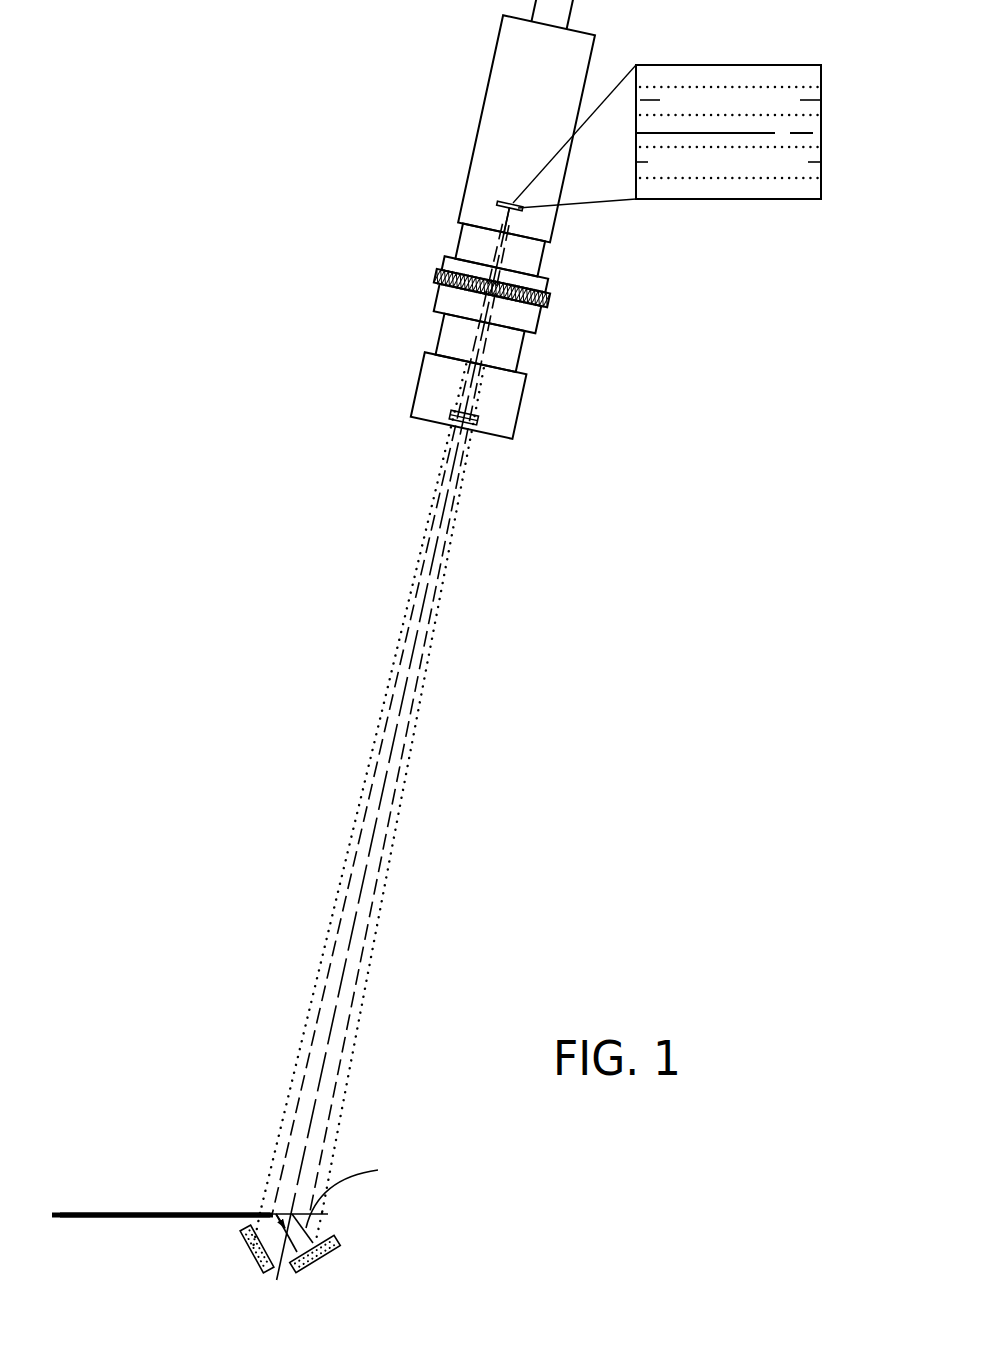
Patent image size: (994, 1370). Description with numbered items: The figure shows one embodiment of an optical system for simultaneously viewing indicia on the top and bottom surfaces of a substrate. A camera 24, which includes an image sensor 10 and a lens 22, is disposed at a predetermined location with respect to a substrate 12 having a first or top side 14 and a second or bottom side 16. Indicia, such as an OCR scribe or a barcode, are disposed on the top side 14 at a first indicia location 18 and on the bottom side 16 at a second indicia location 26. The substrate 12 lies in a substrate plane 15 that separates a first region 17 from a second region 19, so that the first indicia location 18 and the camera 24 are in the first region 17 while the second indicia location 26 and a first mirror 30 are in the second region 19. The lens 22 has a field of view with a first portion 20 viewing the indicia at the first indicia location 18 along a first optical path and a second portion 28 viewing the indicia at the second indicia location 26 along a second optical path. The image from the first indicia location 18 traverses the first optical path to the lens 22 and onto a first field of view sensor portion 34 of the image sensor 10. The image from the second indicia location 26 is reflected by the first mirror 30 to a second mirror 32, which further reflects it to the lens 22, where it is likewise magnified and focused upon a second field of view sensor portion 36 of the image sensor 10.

The image sensor 10 is at (565, 259).
The substrate 12 is at (92, 1228).
The first or top side 14 is at (186, 1210).
The substrate plane 15 is at (356, 1190).
The second or bottom side 16 is at (182, 1220).
The first region 17 is at (276, 712).
The first indicia location 18 is at (270, 1210).
The second region 19 is at (262, 1337).
The first portion of field of view 20 is at (323, 981).
The lens 22 is at (486, 420).
The camera 24 is at (450, 165).
The second indicia location 26 is at (288, 1224).
The second portion of field of view 28 is at (365, 946).
The first mirror 30 is at (248, 1250).
The second mirror 32 is at (318, 1263).
The first field of view sensor portion 34 is at (820, 73).
The second field of view sensor portion 36 is at (821, 171).